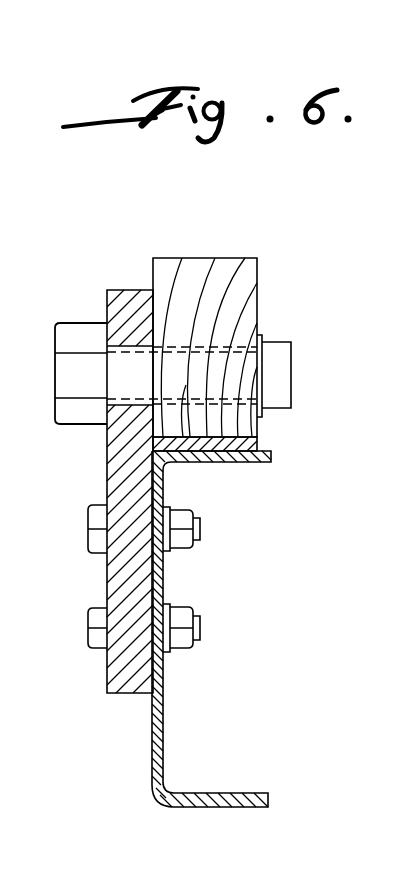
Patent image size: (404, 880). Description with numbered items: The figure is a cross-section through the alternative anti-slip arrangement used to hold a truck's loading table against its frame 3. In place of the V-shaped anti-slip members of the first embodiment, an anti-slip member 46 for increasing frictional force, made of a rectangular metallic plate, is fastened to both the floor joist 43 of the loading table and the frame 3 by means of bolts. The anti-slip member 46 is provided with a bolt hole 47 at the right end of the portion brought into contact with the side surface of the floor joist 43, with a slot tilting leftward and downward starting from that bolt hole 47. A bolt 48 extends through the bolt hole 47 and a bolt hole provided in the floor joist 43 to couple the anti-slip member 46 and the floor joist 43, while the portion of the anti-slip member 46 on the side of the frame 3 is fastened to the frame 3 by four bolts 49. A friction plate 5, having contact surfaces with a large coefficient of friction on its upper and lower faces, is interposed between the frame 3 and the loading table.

The frame 3 is at (165, 737).
The friction plate 5 is at (256, 448).
The floor joist 43 is at (258, 293).
The anti-slip member 46 is at (126, 296).
The bolt hole 47 is at (135, 346).
The bolt 48 is at (292, 378).
The bolts 49 is at (92, 543).